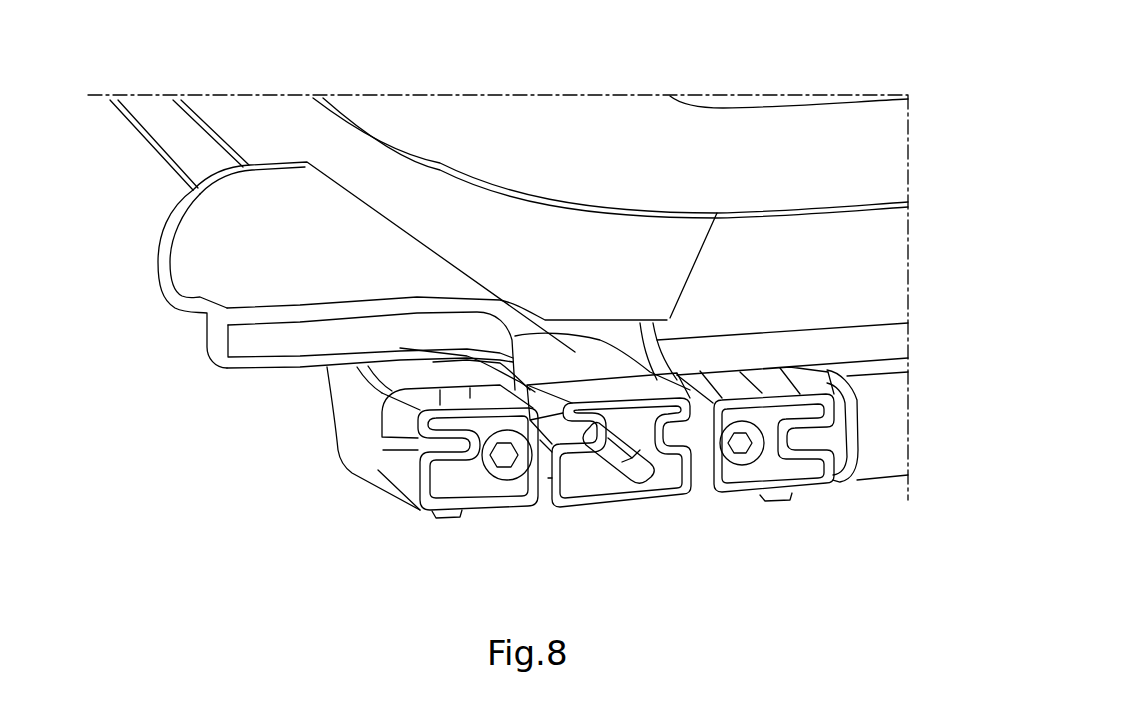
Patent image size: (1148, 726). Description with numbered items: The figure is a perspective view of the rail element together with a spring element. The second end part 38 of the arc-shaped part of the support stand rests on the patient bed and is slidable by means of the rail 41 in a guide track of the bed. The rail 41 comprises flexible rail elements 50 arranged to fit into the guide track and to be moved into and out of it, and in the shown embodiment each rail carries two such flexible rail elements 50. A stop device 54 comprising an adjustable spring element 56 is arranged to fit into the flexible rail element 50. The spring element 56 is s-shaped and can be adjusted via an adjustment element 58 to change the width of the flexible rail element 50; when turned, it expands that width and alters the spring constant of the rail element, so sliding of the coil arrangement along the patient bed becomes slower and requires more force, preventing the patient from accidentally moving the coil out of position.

The second end part 38 is at (568, 173).
The adjustment element 58 is at (180, 303).
The stop device 54 is at (253, 412).
The flexible rail element 50 is at (485, 507).
The adjustable spring element 56 is at (613, 487).
The rail 41 is at (877, 443).